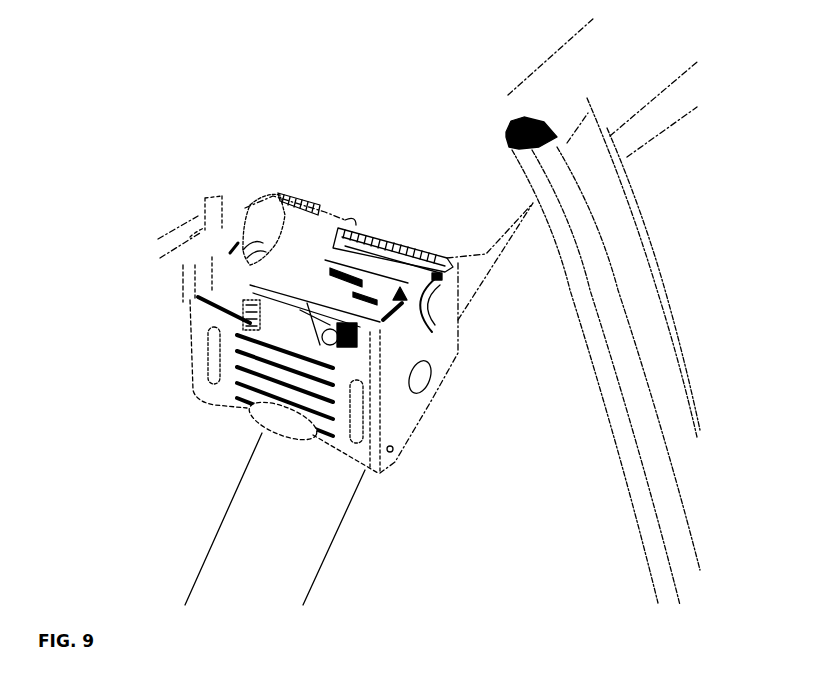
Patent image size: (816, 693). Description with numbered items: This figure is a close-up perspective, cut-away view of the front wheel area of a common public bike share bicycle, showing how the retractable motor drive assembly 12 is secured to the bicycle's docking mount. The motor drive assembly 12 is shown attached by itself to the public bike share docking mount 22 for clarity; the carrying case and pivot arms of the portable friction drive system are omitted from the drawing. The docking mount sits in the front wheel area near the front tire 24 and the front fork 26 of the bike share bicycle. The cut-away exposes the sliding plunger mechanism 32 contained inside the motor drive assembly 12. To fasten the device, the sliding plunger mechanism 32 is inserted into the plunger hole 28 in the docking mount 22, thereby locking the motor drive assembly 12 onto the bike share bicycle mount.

The retractable motor drive assembly 12 is at (178, 352).
The public bike share docking mount 22 is at (412, 188).
The front tires of public bike share bicycle 24 is at (235, 472).
The front fork of public bike share bicycle 26 is at (533, 112).
The plunger hole in docking mount 28 is at (300, 247).
The sliding plunger mechanism 32 is at (442, 308).